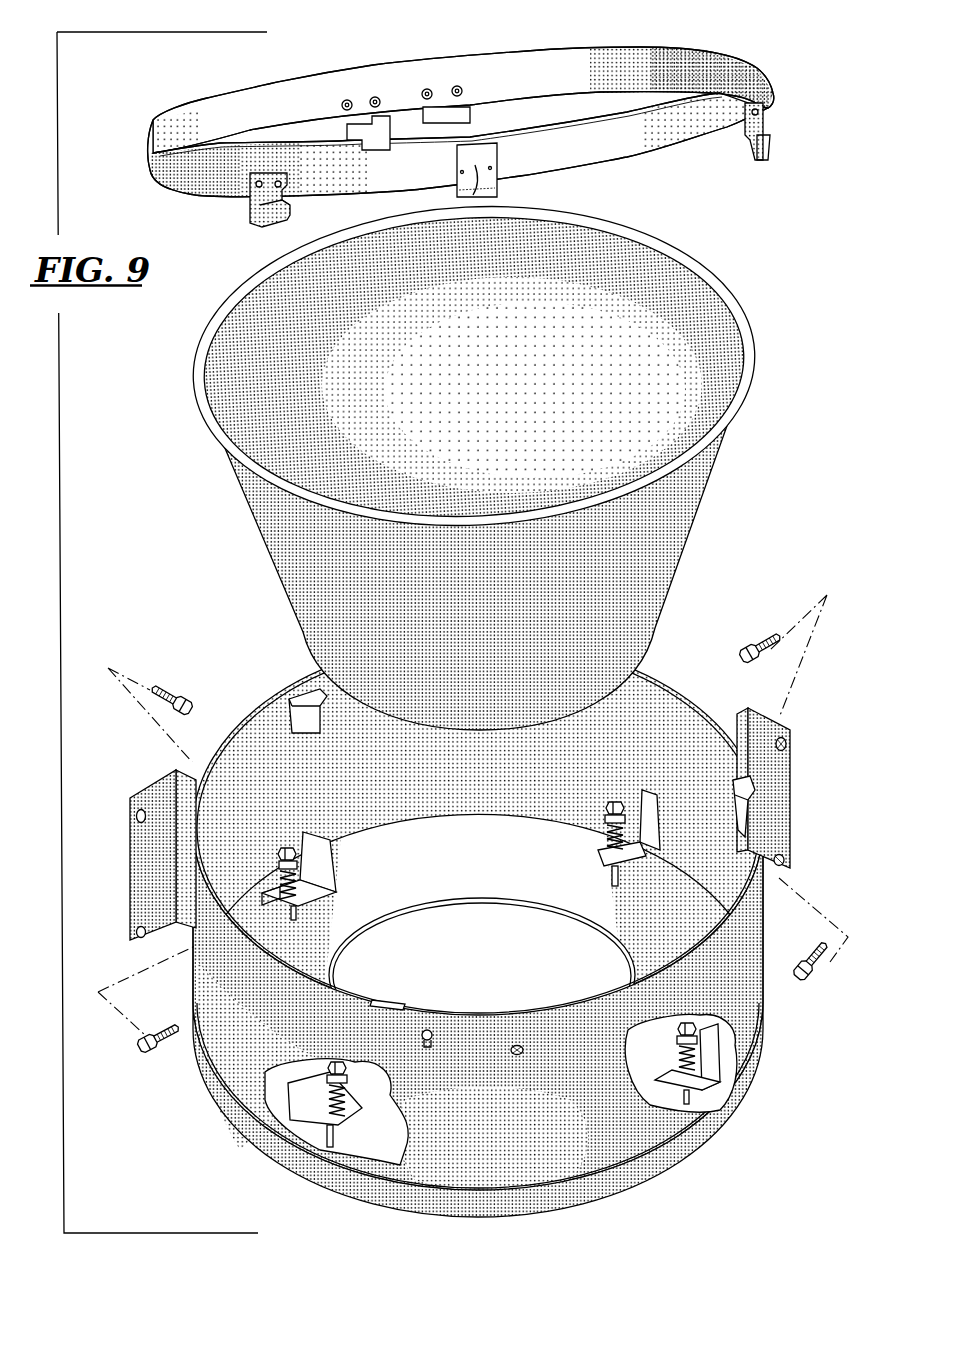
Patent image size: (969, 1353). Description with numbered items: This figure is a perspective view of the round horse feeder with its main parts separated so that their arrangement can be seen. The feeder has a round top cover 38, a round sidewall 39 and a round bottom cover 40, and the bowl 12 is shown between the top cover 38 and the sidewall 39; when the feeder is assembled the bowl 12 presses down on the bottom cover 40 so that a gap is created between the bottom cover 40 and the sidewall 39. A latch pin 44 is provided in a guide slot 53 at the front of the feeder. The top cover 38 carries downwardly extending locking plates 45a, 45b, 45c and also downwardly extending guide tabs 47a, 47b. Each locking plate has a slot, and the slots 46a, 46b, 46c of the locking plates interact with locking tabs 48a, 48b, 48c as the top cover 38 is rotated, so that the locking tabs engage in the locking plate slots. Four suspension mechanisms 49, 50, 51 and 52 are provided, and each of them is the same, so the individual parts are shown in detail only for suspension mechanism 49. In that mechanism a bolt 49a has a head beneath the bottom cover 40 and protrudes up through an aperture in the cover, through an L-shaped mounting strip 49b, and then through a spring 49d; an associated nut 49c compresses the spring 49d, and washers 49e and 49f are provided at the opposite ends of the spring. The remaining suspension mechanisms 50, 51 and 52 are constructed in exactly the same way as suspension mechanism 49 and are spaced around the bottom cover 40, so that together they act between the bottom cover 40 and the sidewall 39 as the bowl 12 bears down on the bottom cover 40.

The bowl 12 is at (702, 538).
The round top cover 38 is at (487, 138).
The round sidewall 39 is at (760, 994).
The round bottom cover 40 is at (714, 1135).
The latch pin 44 is at (430, 1032).
The locking plate 45a is at (769, 150).
The locking plate 45b is at (285, 213).
The locking plate 45c is at (370, 100).
The slot 46a is at (756, 147).
The slot 46b is at (258, 208).
The slot 46c is at (352, 130).
The guide tab 47a is at (407, 108).
The guide tab 47b is at (500, 193).
The locking tab 48a is at (733, 773).
The locking tab 48b is at (325, 692).
The locking tab 48c is at (382, 1000).
The suspension mechanism 49 is at (293, 861).
The bolt 49a is at (300, 904).
The L-shaped mounting strip 49b is at (283, 850).
The nut 49c is at (300, 856).
The spring 49d is at (275, 878).
The washer 49e is at (288, 906).
The washer 49f is at (287, 846).
The suspension mechanism 50 is at (600, 840).
The suspension mechanism 51 is at (658, 1058).
The suspension mechanism 52 is at (315, 1072).
The guide slot 53 is at (427, 1040).